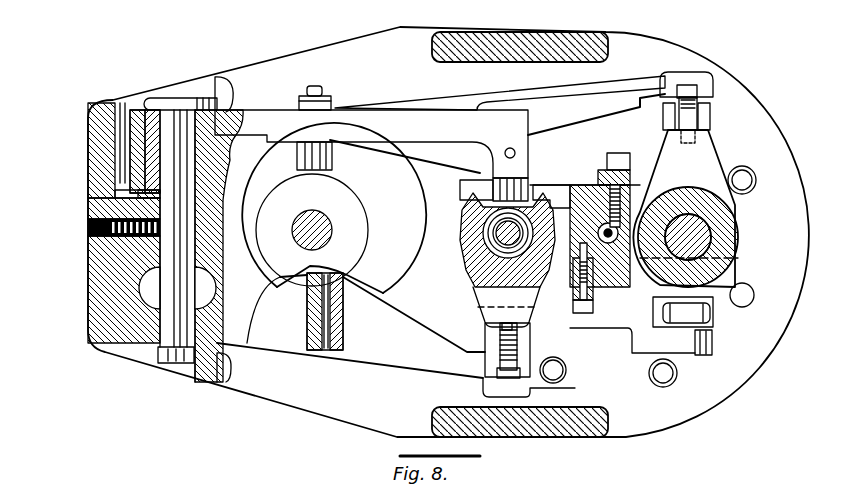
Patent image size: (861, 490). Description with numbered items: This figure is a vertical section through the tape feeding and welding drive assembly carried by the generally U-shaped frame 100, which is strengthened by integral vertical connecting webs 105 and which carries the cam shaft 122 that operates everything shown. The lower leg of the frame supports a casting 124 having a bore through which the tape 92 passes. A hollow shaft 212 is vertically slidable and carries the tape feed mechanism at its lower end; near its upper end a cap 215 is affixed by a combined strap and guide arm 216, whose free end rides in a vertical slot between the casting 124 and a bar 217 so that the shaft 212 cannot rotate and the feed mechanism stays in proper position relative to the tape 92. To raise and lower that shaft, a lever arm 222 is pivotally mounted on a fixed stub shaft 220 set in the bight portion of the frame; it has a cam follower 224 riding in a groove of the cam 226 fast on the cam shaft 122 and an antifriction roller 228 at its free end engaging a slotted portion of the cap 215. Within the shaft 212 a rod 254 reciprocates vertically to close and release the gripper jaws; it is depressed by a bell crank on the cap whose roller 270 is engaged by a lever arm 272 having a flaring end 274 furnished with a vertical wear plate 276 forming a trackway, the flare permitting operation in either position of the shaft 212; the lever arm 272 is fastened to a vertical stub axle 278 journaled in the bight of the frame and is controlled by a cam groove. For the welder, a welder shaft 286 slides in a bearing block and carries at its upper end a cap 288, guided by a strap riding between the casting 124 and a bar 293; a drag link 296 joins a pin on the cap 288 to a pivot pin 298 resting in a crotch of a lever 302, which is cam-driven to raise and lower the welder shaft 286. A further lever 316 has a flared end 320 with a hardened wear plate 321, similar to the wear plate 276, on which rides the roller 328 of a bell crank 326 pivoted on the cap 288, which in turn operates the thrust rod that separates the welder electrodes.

The U-shaped frame 100 is at (270, 62).
The vertical connecting webs 105 is at (478, 32).
The cam shaft 122 is at (293, 232).
The casting 124 is at (576, 183).
The hollow shaft 212 is at (463, 220).
The cap 215 is at (466, 272).
The combined strap and guide arm 216 is at (557, 187).
The bar 217 is at (638, 170).
The fixed stub shaft 220 is at (160, 338).
The lever arm 222 is at (357, 113).
The cam follower 224 is at (312, 170).
The cam 226 is at (392, 207).
The antifriction roller 228 is at (497, 192).
The rod 254 is at (510, 246).
The roller 270 is at (483, 338).
The lever arm 272 is at (333, 357).
The flaring end 274 is at (540, 390).
The vertical wear plate 276 is at (513, 367).
The vertical stub axle 278 is at (217, 307).
The welder shaft 286 is at (667, 185).
The cap 288 is at (717, 157).
The tape 92 is at (600, 236).
The bar 293 is at (592, 297).
The drag link 296 is at (707, 313).
The pivot pin 298 is at (713, 340).
The lever 302 is at (580, 330).
The lever 316 is at (613, 80).
The flared end 320 is at (683, 72).
The hardened wear plate 321 is at (697, 85).
The bell crank 326 is at (710, 110).
The roller 328 is at (705, 97).